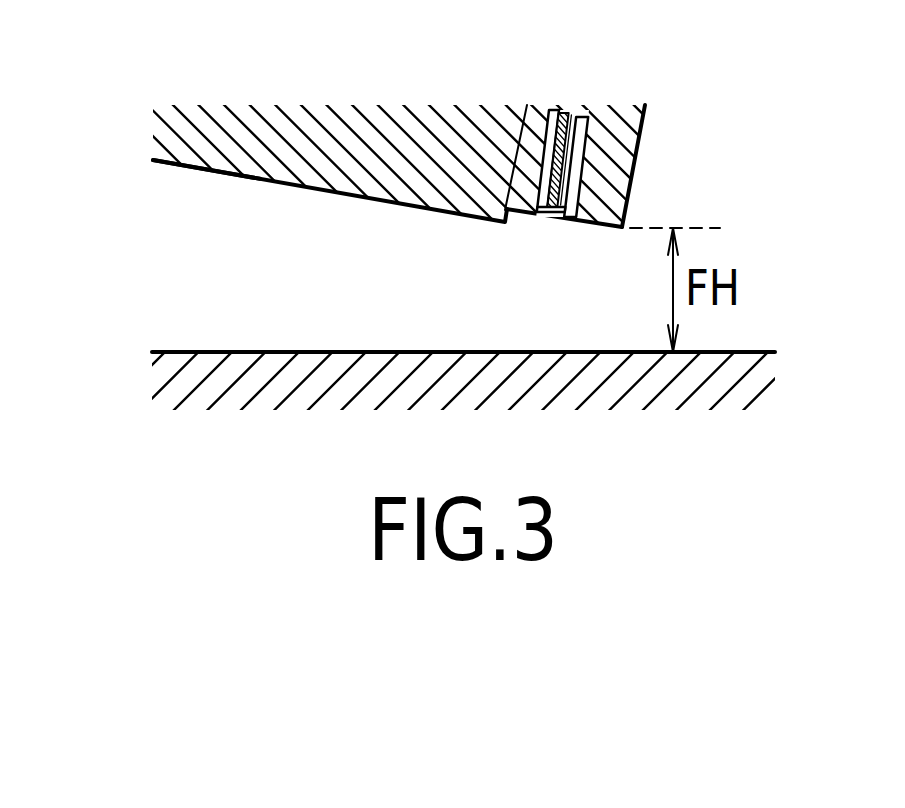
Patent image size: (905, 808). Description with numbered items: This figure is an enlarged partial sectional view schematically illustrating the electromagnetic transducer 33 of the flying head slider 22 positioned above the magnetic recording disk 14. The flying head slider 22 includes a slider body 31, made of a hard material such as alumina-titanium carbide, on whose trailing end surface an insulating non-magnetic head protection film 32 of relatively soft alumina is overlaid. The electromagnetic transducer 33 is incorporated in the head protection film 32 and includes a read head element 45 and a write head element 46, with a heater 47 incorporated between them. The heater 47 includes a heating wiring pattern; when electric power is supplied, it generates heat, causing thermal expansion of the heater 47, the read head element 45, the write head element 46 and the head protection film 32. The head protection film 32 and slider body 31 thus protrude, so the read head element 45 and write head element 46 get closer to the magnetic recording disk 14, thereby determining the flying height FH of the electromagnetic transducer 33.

The magnetic recording disk 14 is at (202, 354).
The flying head slider 22 is at (170, 163).
The slider body 31 is at (397, 205).
The head protection film 32 is at (633, 166).
The electromagnetic transducer 33 is at (553, 149).
The read head element 45 is at (534, 212).
The write head element 46 is at (570, 217).
The heater 47 is at (550, 209).